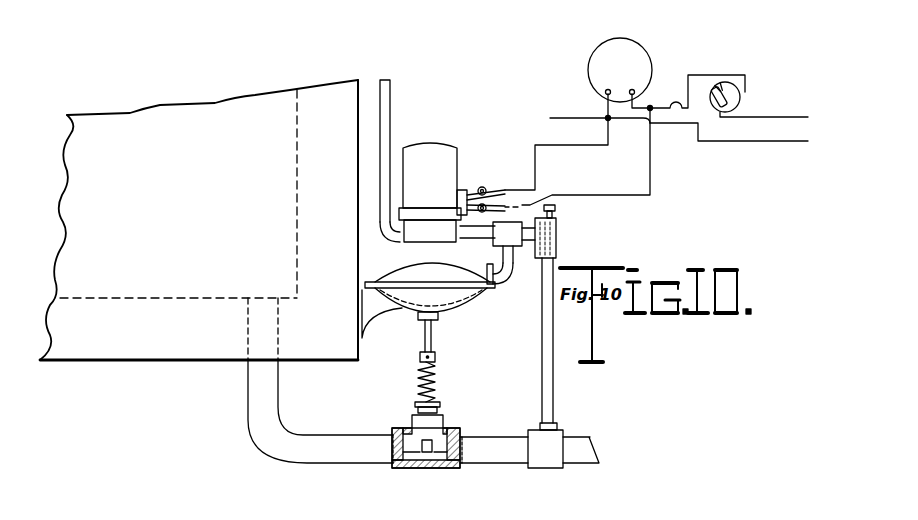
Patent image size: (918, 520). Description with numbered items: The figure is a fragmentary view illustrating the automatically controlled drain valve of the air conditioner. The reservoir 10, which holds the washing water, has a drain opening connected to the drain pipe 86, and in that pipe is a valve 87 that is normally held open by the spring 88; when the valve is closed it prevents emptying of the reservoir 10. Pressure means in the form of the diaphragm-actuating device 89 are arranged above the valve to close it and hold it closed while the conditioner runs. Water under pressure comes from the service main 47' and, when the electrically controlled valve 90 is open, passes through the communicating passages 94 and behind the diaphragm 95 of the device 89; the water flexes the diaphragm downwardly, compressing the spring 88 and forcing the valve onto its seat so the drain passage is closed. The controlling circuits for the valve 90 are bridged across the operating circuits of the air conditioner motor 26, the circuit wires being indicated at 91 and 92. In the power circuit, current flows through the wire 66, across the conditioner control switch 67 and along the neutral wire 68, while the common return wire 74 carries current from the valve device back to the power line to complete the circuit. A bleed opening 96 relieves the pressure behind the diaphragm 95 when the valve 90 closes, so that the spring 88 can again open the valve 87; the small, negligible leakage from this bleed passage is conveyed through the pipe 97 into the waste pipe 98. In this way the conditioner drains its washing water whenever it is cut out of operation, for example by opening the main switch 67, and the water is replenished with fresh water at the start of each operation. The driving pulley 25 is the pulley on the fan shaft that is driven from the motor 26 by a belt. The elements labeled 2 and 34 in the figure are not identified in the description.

The cabinet 2 is at (90, 130).
The reservoir 10 is at (238, 283).
The driving pulley 25 is at (257, 310).
The air conditioner motor 26 is at (640, 66).
The tee fitting 34 is at (498, 250).
The service main 47' is at (407, 161).
The wire 66 is at (772, 119).
The conditioner control switch 67 is at (740, 96).
The neutral wire 68 is at (680, 110).
The common return wire 74 is at (588, 117).
The drain pipe 86 is at (352, 455).
The valve 87 is at (445, 424).
The spring 88 is at (436, 372).
The diaphragm-actuating device 89 is at (455, 300).
The electrically controlled valve 90 is at (433, 192).
The circuit wire 91 is at (586, 147).
The circuit wire 92 is at (640, 197).
The communicating passages 94 is at (476, 227).
The diaphragm 95 is at (405, 285).
The bleed opening 96 is at (558, 243).
The pipe 97 is at (553, 394).
The waste pipe 98 is at (580, 452).